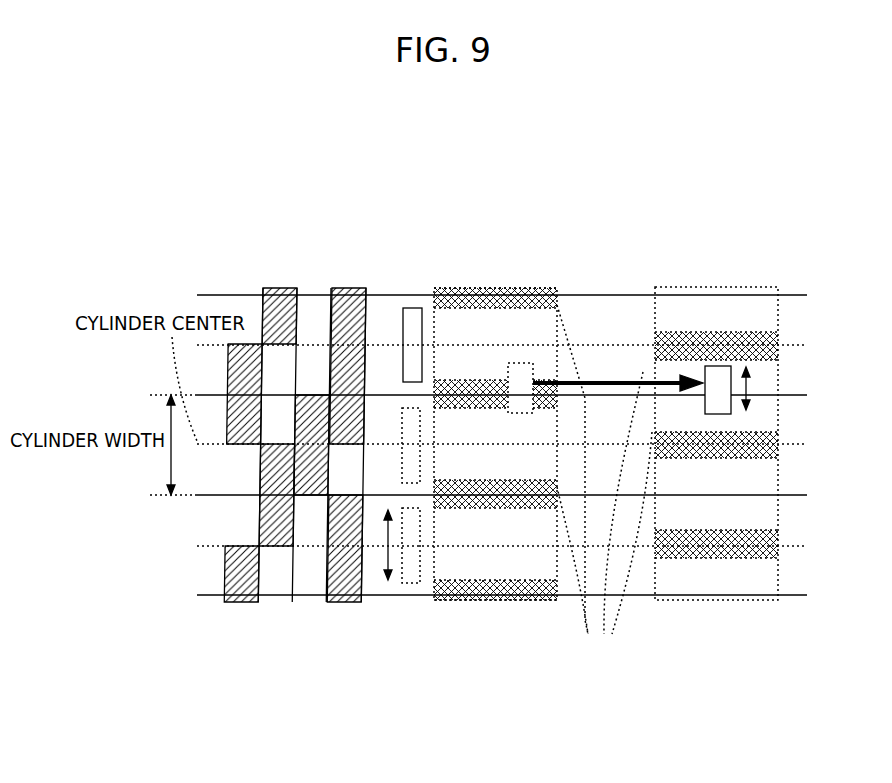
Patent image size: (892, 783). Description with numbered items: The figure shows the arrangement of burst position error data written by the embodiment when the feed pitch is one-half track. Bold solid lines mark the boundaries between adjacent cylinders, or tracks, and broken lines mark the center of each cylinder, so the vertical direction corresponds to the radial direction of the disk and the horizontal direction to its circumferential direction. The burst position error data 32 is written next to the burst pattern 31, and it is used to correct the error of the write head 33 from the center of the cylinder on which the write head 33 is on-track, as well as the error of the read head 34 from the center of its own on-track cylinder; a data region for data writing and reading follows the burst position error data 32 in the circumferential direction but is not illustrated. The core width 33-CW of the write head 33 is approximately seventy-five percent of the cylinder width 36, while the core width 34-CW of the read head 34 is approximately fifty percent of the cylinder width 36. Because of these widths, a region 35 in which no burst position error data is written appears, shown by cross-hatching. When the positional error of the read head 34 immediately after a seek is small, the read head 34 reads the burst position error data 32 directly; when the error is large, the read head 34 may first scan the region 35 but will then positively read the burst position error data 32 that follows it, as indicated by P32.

The burst pattern 31 is at (375, 605).
The burst position error data 32 is at (782, 262).
The write head 33 is at (403, 306).
The core width of the write head 33-CW is at (391, 556).
The read head 34 is at (520, 413).
The core width of the read head 34-CW is at (749, 388).
The region in which no burst position error data is written 35 is at (604, 485).
The cylinder width 36 is at (170, 455).
The burst position error data read following region 35 P32 is at (690, 415).